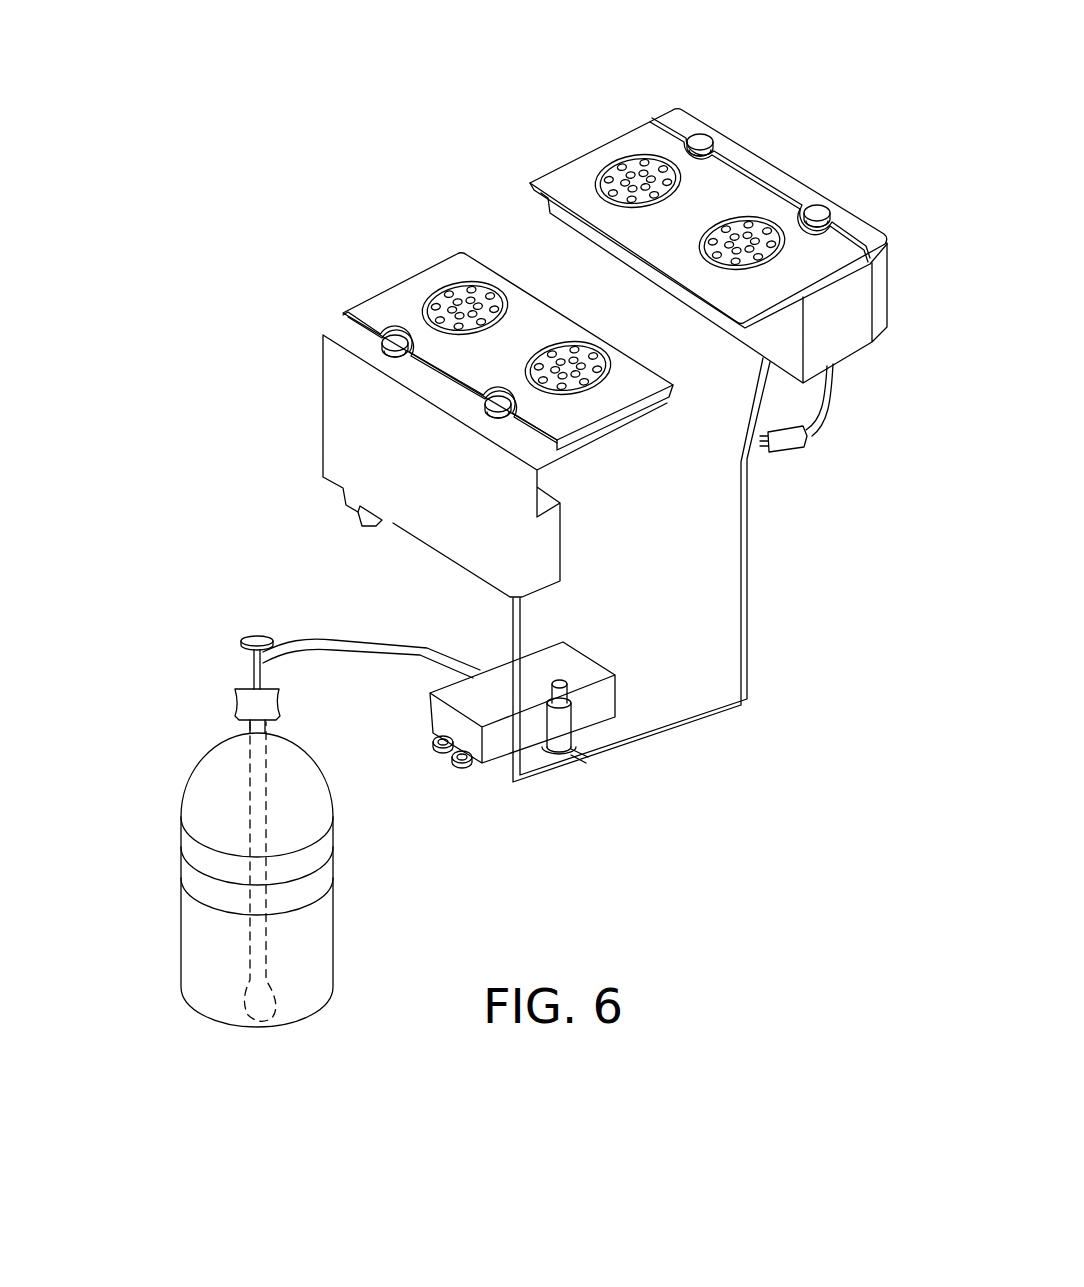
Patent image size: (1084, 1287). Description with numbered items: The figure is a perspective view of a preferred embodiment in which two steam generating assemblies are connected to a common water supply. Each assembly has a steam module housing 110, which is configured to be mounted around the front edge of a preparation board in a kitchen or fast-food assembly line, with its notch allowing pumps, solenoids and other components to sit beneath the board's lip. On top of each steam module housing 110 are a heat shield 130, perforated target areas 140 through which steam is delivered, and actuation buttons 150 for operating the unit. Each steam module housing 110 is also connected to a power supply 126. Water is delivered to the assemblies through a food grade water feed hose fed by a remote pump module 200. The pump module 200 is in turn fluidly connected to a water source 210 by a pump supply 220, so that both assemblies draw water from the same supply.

The steam module housing 110 is at (875, 312).
The power supply 126 is at (372, 527).
The heat shield 130 is at (568, 186).
The perforated target area 140 is at (532, 352).
The actuation button 150 is at (490, 395).
The pump module 200 is at (497, 753).
The water source 210 is at (222, 777).
The pump supply 220 is at (250, 1000).